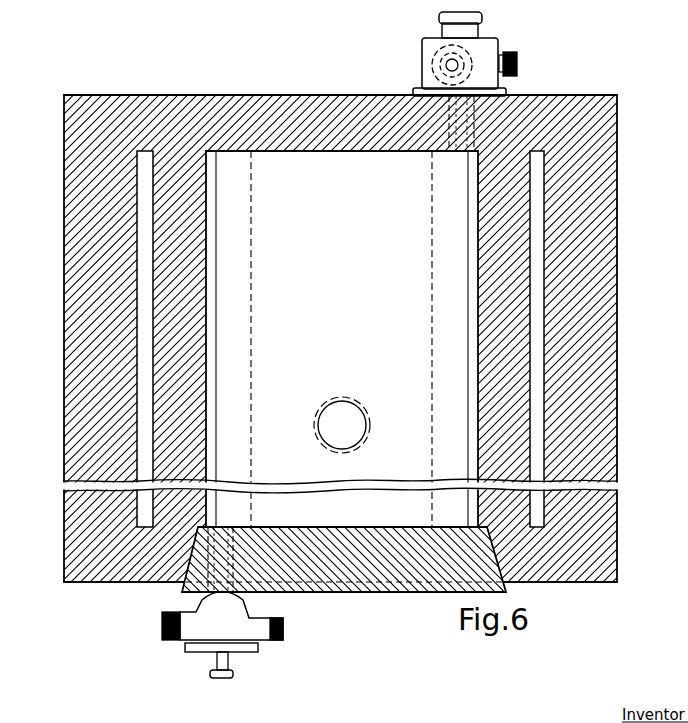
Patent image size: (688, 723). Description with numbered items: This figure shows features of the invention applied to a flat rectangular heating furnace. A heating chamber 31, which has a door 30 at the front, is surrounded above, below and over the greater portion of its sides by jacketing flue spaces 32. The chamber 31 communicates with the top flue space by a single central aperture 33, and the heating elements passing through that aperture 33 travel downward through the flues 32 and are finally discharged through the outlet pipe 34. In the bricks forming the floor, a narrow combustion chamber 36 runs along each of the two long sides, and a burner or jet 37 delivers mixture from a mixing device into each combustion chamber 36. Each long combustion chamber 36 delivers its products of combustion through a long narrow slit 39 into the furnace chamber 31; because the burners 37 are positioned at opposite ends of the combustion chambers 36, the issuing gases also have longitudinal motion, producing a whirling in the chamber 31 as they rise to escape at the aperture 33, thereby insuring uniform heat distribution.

The door 30 is at (388, 576).
The heating chamber 31 is at (280, 339).
The jacketing flue spaces 32 is at (145, 430).
The central aperture 33 is at (345, 408).
The outlet pipe 34 is at (316, 444).
The combustion chamber 36 is at (243, 231).
The burner or jet 37 is at (452, 122).
The slit 39 is at (208, 287).